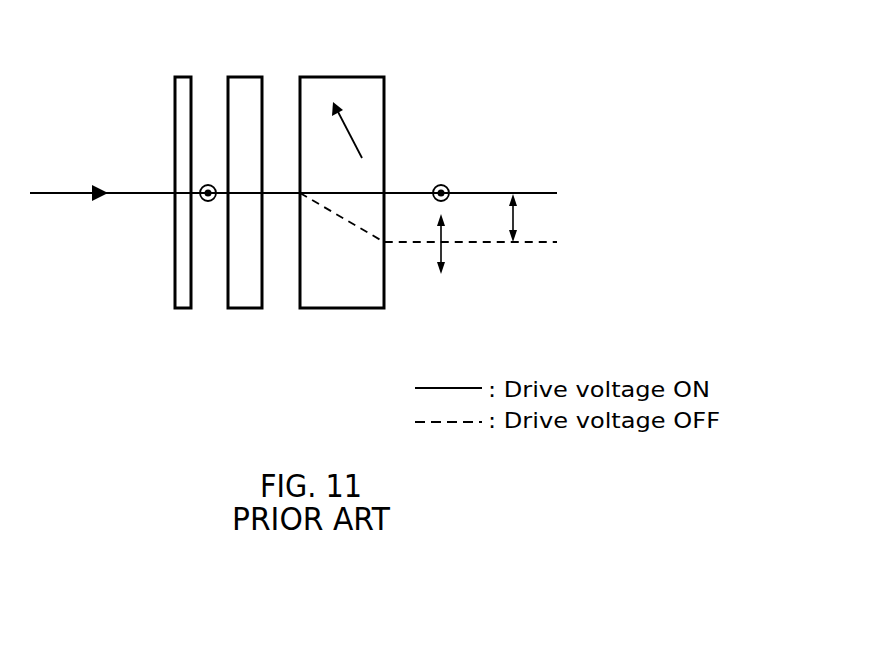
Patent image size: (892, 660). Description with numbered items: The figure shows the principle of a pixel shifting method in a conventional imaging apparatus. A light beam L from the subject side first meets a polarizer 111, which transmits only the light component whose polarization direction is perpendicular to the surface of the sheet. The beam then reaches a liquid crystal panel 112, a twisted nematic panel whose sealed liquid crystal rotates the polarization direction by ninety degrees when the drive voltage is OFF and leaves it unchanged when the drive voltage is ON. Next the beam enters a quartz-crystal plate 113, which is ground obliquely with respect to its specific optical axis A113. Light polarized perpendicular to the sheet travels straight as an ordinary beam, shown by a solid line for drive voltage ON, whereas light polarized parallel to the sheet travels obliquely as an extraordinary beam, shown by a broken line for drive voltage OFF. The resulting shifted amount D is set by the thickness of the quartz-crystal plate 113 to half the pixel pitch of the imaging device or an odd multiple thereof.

The polarizer 111 is at (183, 82).
The liquid crystal panel 112 is at (247, 82).
The quartz-crystal plate 113 is at (335, 82).
The optical axis A113 is at (348, 130).
The light beam L is at (62, 196).
The shifted amount D is at (515, 217).